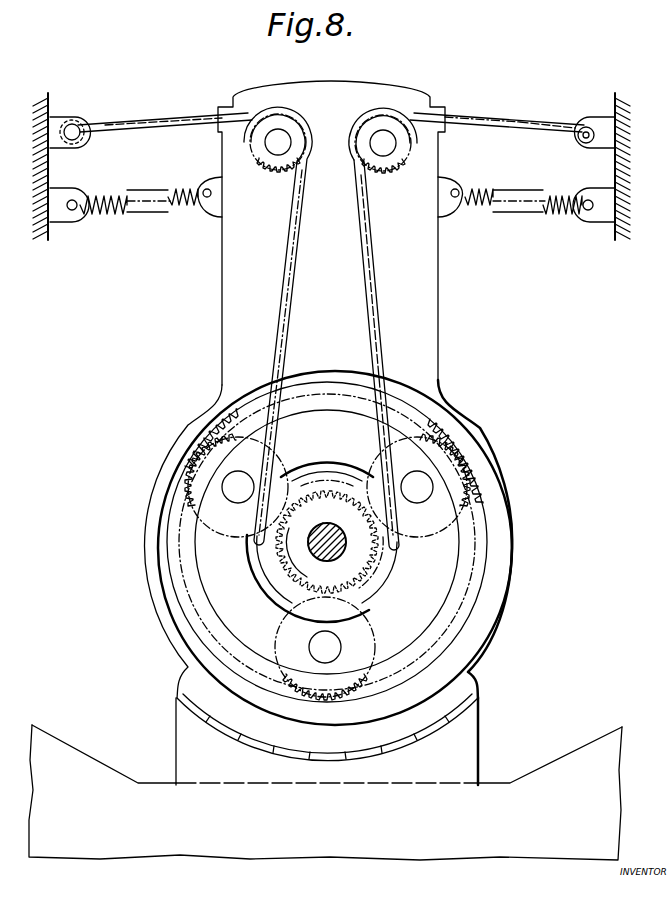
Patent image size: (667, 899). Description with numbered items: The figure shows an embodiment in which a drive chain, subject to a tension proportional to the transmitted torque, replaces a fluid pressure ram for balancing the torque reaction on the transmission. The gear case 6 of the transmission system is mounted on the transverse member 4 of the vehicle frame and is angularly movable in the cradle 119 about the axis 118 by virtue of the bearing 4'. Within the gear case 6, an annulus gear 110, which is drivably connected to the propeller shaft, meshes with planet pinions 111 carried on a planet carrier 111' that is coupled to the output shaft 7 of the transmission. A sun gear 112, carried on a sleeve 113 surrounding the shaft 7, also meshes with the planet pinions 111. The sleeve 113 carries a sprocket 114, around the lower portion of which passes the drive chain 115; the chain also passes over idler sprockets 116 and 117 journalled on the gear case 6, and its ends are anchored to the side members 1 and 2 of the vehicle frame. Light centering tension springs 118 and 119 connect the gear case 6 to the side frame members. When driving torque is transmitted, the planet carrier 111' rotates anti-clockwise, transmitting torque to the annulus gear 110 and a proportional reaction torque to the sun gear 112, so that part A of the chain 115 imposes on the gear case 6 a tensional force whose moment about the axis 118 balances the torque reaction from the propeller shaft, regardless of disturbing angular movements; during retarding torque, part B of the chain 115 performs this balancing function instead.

The side member 1 is at (614, 167).
The side member 2 is at (50, 170).
The transverse member 4 is at (325, 809).
The bearing 4' is at (327, 727).
The gear case 6 is at (428, 294).
The output shaft 7 is at (326, 521).
The annulus gear 110 is at (422, 413).
The planet pinion 111 is at (325, 567).
The planet carrier 111' is at (376, 542).
The sun gear 112 is at (378, 562).
The sleeve 113 is at (295, 560).
The sprocket 114 is at (313, 478).
The drive chain 115 is at (368, 327).
The idler sprocket 116 is at (289, 134).
The idler sprocket 117 is at (375, 131).
The centering tension spring / axis 118 is at (151, 205).
The centering tension spring / cradle 119 is at (516, 203).
The part A of the chain A is at (145, 122).
The part B of the chain B is at (518, 124).